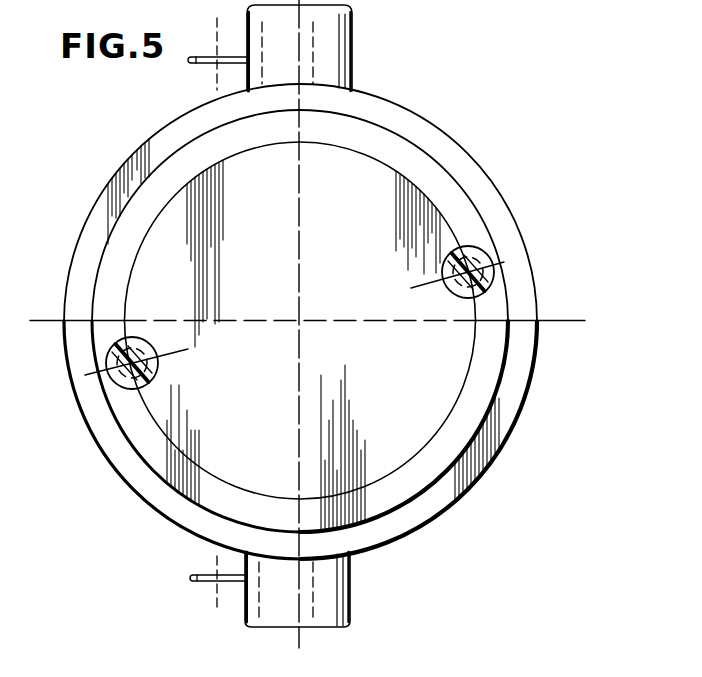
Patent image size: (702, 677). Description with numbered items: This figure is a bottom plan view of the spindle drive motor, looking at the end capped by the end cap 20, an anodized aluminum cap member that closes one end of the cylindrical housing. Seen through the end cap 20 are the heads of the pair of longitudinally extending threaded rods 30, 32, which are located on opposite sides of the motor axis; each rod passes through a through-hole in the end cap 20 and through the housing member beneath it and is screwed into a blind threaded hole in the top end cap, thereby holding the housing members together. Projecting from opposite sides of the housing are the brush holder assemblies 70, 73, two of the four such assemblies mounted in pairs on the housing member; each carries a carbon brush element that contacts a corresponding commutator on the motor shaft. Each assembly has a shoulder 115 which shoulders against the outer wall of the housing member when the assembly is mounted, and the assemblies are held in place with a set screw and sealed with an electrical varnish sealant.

The end cap 20 is at (478, 398).
The threaded rod 30 is at (160, 370).
The threaded rod 32 is at (455, 303).
The brush holder assembly 70 is at (298, 48).
The brush holder assembly 73 is at (302, 595).
The shoulder 115 is at (342, 557).